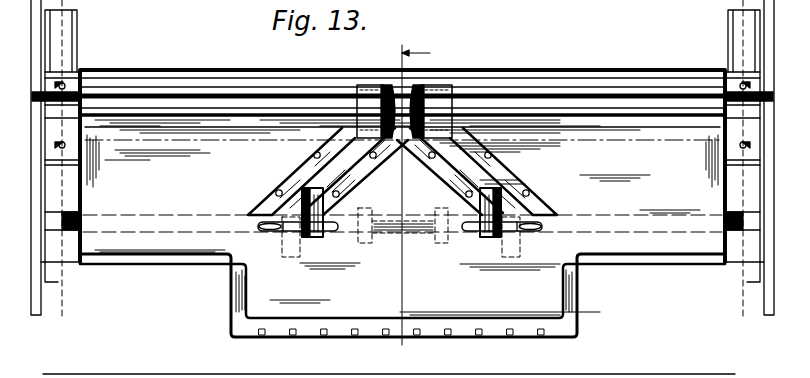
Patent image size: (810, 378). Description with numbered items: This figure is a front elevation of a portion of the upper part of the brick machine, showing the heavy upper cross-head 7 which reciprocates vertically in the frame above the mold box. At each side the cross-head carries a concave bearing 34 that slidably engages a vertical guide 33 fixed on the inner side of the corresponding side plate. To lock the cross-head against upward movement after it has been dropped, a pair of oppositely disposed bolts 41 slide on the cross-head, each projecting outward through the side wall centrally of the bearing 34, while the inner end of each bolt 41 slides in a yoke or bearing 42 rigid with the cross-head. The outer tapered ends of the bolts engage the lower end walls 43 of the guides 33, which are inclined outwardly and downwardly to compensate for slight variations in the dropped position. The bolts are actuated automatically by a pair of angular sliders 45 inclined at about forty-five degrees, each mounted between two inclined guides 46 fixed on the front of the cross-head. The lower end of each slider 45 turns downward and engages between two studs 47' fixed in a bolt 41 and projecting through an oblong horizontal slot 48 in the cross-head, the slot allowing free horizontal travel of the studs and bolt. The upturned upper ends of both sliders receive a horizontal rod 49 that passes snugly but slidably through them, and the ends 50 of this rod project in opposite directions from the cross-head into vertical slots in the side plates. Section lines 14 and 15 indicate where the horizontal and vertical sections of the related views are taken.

The upper cross-head 7 is at (402, 293).
The section line 14— 14 is at (45, 218).
The section line 15— 15 is at (411, 197).
The vertical guide 33 is at (40, 319).
The concave bearing 34 is at (80, 47).
The bolt 41 is at (224, 232).
The yoke or bearing 42 is at (420, 251).
The lower end wall 43 is at (55, 283).
The angular slider 45 is at (322, 172).
The inclined guide 46 is at (276, 184).
The stud 47' is at (401, 224).
The oblong horizontal slot 48 is at (268, 231).
The horizontal rod 49 is at (536, 106).
The rod end 50 is at (35, 100).